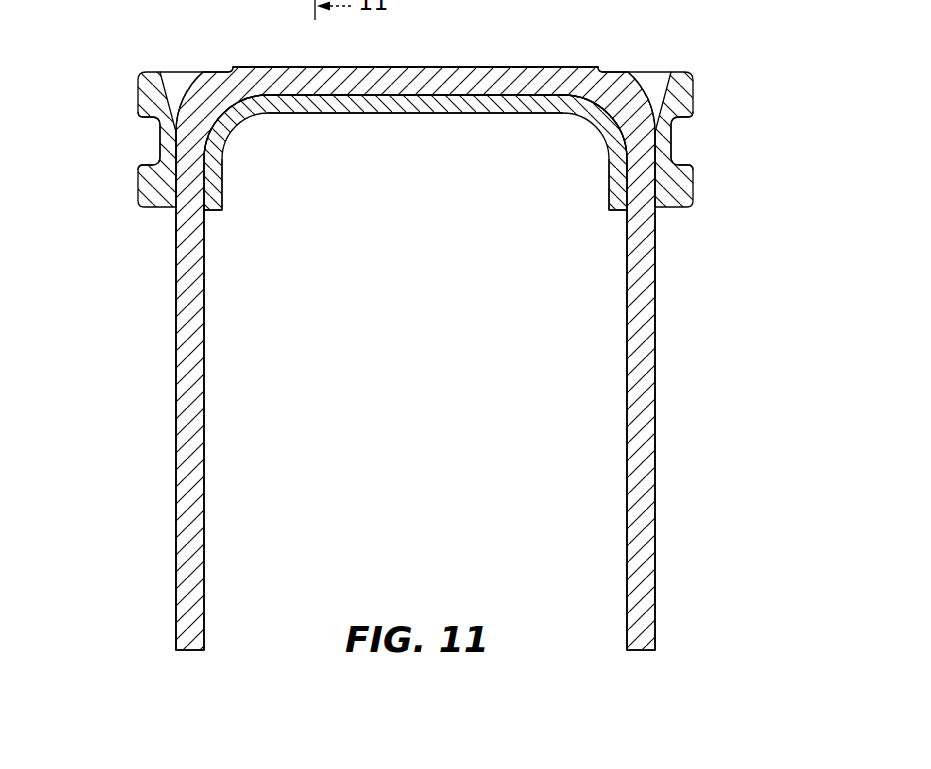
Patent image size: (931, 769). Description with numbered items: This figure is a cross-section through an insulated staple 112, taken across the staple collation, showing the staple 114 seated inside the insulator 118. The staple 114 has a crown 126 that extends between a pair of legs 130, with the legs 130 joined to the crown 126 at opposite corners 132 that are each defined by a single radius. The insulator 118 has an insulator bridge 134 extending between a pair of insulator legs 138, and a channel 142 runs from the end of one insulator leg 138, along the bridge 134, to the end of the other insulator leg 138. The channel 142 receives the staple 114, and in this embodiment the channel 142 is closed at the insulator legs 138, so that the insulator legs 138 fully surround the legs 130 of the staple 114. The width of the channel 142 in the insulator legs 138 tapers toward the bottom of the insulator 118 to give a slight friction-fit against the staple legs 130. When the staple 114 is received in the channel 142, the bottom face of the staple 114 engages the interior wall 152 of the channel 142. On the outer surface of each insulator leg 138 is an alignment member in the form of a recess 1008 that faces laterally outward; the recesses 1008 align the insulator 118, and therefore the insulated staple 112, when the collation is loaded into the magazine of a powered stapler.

The insulated staple 112 is at (722, 65).
The staple 114 is at (657, 441).
The legs 130 is at (192, 506).
The crown 126 is at (421, 80).
The channel 142 is at (512, 87).
The insulator bridge 134 is at (459, 114).
The insulator 118 is at (352, 114).
The interior wall 152 is at (310, 88).
The insulator legs 138 is at (222, 198).
The corners 132 is at (202, 90).
The recess 1008 is at (158, 160).